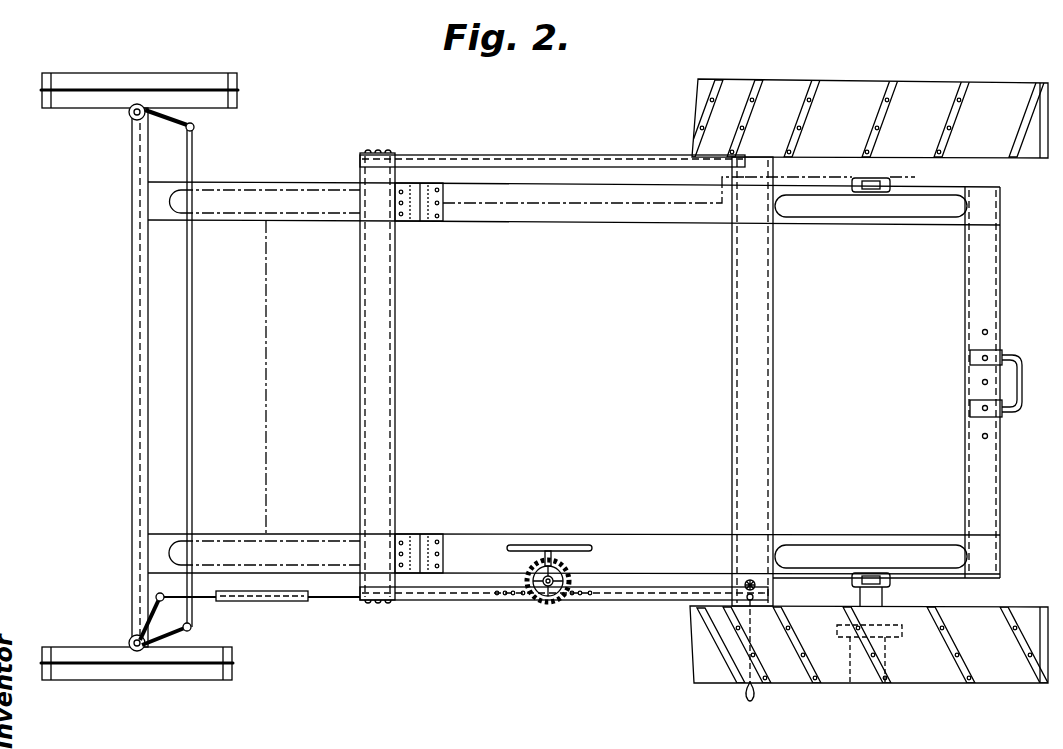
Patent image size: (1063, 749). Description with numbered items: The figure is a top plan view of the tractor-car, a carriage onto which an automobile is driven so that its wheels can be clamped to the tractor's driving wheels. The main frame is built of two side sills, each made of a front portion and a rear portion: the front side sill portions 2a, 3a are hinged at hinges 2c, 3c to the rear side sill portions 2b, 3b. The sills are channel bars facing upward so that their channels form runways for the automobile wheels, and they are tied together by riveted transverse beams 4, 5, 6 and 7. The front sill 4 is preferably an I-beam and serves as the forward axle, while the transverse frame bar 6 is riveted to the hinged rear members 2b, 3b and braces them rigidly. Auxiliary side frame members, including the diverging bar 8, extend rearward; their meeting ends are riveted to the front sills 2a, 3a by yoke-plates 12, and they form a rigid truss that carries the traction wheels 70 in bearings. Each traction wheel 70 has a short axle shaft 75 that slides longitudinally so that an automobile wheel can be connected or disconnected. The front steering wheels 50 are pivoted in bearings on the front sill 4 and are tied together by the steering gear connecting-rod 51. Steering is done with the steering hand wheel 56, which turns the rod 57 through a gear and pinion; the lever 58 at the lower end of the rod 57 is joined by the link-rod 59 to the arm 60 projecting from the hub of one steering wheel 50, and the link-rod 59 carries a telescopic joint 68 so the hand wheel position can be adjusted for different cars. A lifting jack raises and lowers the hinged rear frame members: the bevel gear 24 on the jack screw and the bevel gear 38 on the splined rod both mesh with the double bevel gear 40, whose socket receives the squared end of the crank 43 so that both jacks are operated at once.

The front side sill portion 2a is at (203, 535).
The rear side sill portion 2b is at (606, 538).
The hinge 2c is at (418, 534).
The front side sill portion 3a is at (225, 183).
The rear side sill portion 3b is at (592, 216).
The hinge 3c is at (420, 224).
The front sill 4 is at (132, 336).
The transverse beam 5 is at (362, 334).
The transverse frame bar 6 is at (732, 320).
The transverse beam 7 is at (990, 492).
The diverging bar 8 is at (467, 163).
The yoke-plate 12 is at (370, 152).
The bevel gear 24 is at (745, 578).
The bevel gear 38 is at (697, 634).
The double bevel gear 40 is at (763, 589).
The crank 43 is at (757, 696).
The front steering wheel 50 is at (100, 76).
The steering gear connecting-rod 51 is at (192, 284).
The steering hand wheel 56 is at (548, 545).
The steering rod 57 is at (540, 600).
The lever 58 is at (572, 600).
The link-rod 59 is at (343, 599).
The arm 60 is at (145, 617).
The telescopic joint 68 is at (282, 602).
The traction wheel 70 is at (838, 84).
The axle shaft 75 is at (880, 598).